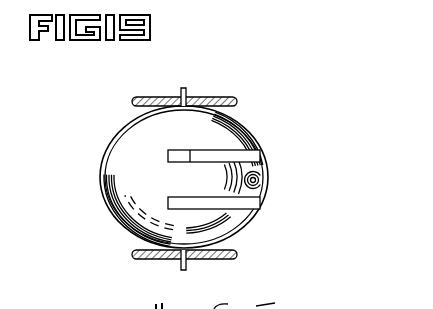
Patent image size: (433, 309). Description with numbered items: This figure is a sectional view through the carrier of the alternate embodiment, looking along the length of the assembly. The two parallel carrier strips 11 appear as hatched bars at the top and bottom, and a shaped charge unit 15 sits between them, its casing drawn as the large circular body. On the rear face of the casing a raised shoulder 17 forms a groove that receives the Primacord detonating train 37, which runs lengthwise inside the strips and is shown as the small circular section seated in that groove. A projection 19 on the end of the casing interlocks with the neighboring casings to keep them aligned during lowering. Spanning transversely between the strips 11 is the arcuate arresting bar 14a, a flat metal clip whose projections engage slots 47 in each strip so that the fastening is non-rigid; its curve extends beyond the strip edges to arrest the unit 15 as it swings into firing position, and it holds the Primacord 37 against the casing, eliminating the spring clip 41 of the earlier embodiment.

The carrier strips 11 is at (222, 97).
The arresting bar 14a is at (258, 137).
The shaped charge units 15 is at (115, 172).
The raised shoulder 17 is at (258, 213).
The projection 19 is at (168, 150).
The Primacord 37 is at (263, 172).
The spring clips 41 is at (183, 88).
The slots 47 is at (181, 268).